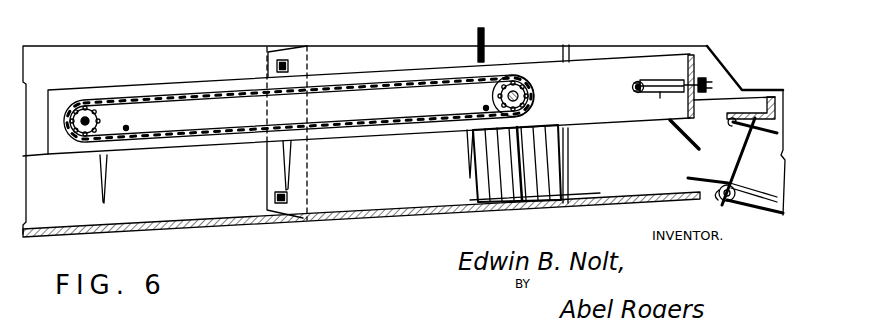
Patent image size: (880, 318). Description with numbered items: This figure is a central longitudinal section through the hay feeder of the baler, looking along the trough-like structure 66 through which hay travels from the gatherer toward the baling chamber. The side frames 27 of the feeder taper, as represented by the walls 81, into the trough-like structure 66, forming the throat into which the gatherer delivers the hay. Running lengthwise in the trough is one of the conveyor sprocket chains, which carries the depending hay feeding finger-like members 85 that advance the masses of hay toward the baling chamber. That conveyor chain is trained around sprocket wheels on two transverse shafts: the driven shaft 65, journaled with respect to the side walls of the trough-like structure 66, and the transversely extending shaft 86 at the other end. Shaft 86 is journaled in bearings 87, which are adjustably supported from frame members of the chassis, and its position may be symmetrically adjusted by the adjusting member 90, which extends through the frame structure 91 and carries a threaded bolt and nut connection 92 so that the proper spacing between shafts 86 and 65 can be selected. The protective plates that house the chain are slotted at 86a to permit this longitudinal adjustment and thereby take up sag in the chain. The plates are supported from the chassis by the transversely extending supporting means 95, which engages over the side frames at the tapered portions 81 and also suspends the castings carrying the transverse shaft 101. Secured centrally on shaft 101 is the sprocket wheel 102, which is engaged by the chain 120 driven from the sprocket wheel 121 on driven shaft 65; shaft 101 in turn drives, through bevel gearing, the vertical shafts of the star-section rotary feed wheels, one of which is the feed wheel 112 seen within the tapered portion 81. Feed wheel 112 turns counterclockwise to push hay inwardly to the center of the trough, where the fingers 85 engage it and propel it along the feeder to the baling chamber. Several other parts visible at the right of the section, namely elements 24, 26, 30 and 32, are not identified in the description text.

The pawl tooth 24 is at (745, 176).
The pivot 26 is at (705, 205).
The side frame 27 is at (597, 187).
The lever 30 is at (760, 132).
The bracket 32 is at (742, 115).
The shaft 65 is at (77, 133).
The trough-like structure 66 is at (223, 207).
The tapered portion 81 is at (325, 58).
The hay feeding finger-like member 85 is at (108, 187).
The shaft 86 is at (637, 82).
The slot 86a is at (663, 100).
The bearing 87 is at (632, 86).
The adjusting member 90 is at (662, 80).
The frame structure 91 is at (694, 58).
The threaded bolt and nut connection 92 is at (707, 78).
The supporting means 95 is at (477, 32).
The shaft 101 is at (515, 88).
The sprocket wheel 102 is at (533, 99).
The rotary feed wheel 112 is at (547, 160).
The chain 120 is at (183, 93).
The sprocket wheel 121 is at (82, 118).